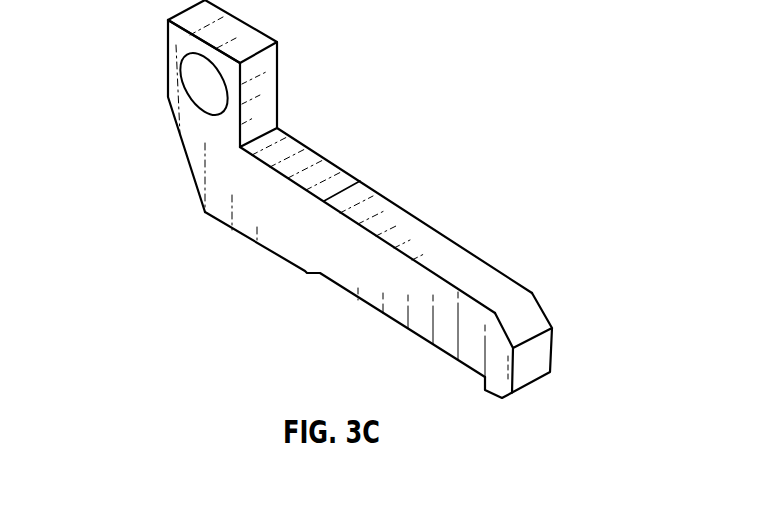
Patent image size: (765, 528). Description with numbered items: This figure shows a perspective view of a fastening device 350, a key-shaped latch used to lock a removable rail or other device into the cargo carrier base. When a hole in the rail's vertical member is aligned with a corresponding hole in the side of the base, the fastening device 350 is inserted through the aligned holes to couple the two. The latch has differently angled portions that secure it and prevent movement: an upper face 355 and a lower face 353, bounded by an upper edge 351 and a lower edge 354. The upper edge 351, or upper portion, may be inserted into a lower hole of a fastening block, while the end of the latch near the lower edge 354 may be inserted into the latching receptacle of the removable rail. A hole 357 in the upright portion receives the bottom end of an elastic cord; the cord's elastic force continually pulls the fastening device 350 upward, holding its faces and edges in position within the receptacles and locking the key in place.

The fastening device 350 is at (327, 211).
The upper edge 351 is at (264, 103).
The lower face 353 is at (371, 311).
The lower edge 354 is at (484, 385).
The upper face 355 is at (382, 202).
The hole 357 is at (198, 85).